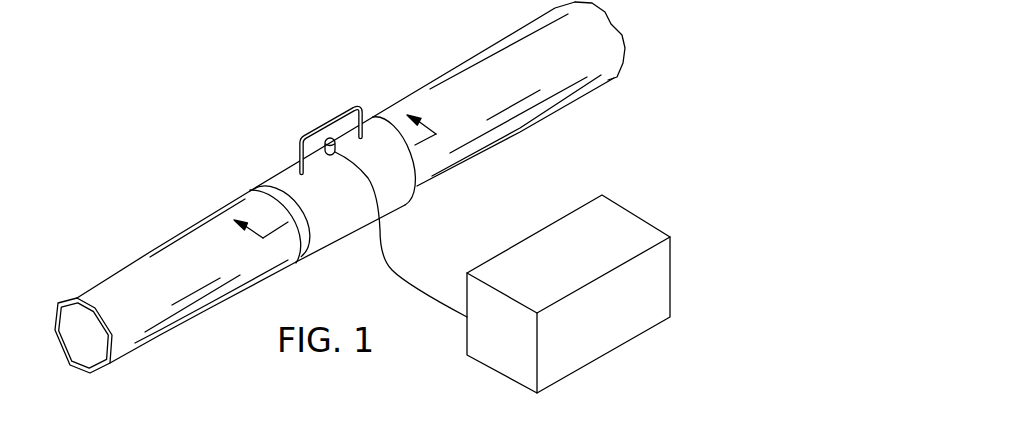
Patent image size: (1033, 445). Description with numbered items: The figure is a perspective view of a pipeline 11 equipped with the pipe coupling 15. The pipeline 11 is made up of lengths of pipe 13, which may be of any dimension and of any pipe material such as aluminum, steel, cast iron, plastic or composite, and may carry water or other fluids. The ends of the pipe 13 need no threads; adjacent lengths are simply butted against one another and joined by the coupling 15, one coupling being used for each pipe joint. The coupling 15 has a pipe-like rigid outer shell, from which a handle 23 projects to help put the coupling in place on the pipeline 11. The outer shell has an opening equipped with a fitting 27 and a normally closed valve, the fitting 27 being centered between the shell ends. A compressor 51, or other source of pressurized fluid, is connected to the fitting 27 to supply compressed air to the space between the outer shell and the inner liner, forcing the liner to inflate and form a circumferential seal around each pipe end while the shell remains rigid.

The pipeline 11 is at (91, 246).
The pipe 13 is at (167, 242).
The pipe coupling 15 is at (270, 172).
The handle 23 is at (347, 108).
The fitting 27 is at (328, 138).
The compressor 51 is at (673, 278).